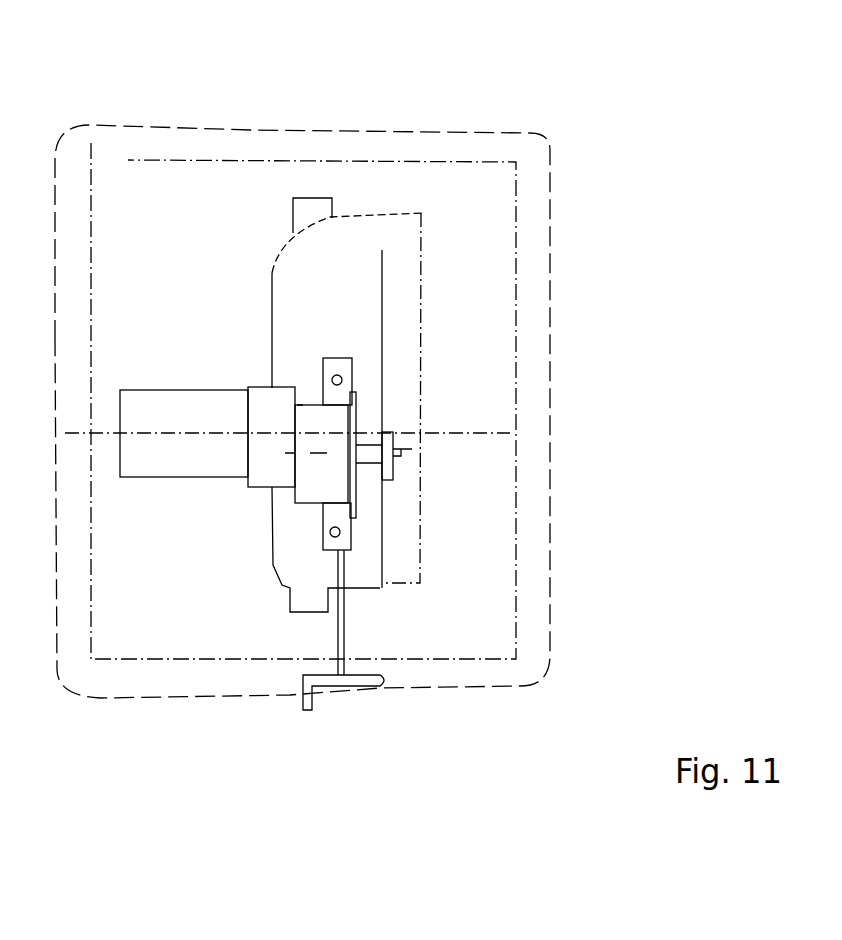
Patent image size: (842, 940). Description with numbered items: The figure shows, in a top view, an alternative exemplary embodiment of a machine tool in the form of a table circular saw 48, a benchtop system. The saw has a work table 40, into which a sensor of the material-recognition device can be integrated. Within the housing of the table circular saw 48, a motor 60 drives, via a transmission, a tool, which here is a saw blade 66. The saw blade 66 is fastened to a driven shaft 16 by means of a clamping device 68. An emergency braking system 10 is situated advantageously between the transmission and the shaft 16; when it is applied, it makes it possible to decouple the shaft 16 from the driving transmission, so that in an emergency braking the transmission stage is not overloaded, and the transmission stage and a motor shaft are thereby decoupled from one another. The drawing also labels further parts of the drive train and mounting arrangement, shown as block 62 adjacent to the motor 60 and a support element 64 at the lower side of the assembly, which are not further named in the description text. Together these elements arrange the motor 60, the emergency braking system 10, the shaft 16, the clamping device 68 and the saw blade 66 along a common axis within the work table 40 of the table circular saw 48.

The emergency braking system 10 is at (312, 410).
The driven shaft 16 is at (372, 442).
The work table 40 is at (464, 619).
The table circular saw 48 is at (497, 136).
The motor 60 is at (163, 451).
The coupling block 62 is at (264, 468).
The mounting foot 64 is at (362, 688).
The saw blade 66 is at (379, 430).
The clamping device 68 is at (395, 463).